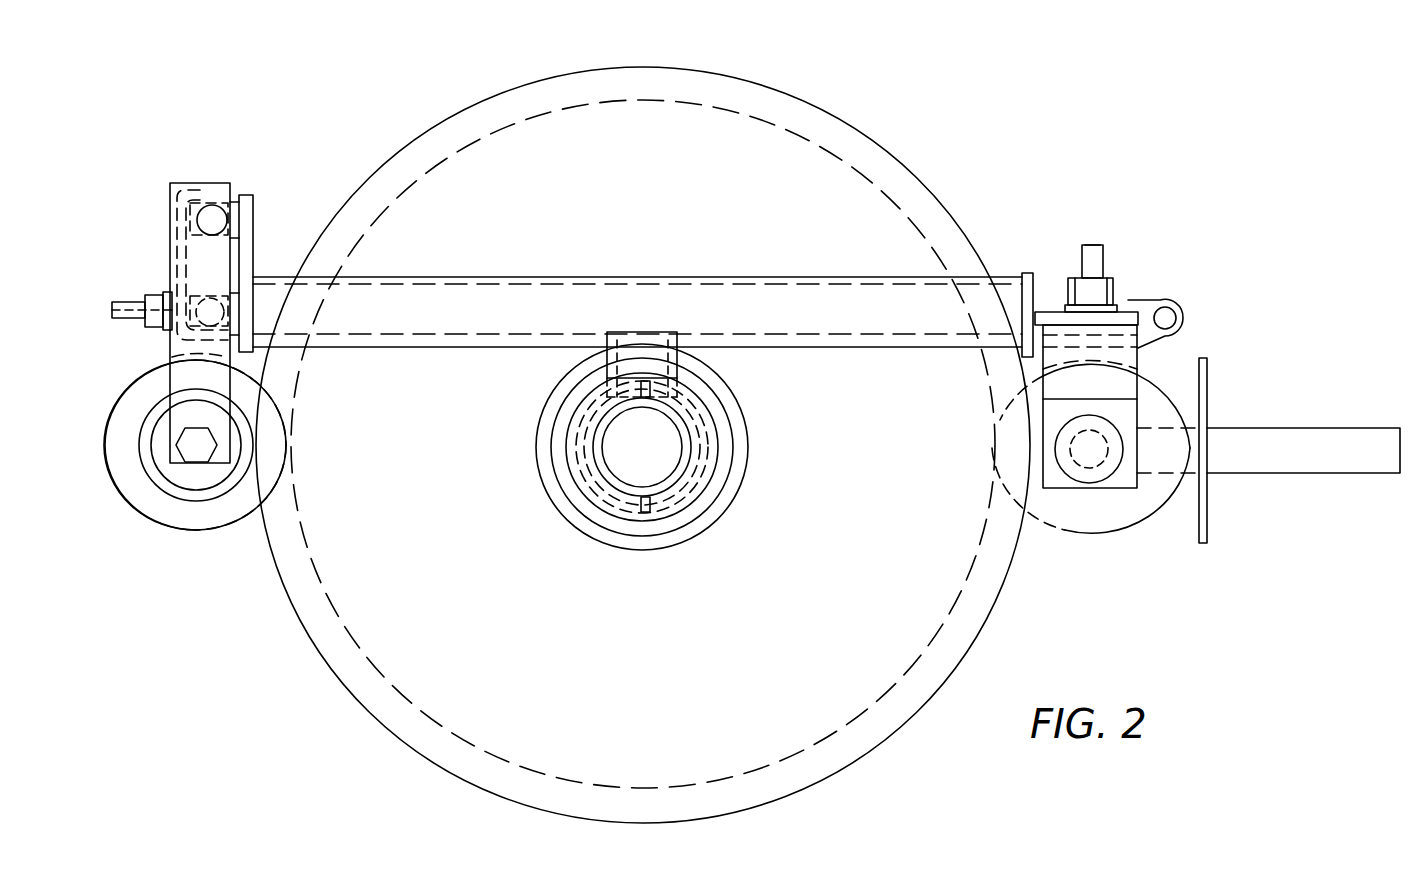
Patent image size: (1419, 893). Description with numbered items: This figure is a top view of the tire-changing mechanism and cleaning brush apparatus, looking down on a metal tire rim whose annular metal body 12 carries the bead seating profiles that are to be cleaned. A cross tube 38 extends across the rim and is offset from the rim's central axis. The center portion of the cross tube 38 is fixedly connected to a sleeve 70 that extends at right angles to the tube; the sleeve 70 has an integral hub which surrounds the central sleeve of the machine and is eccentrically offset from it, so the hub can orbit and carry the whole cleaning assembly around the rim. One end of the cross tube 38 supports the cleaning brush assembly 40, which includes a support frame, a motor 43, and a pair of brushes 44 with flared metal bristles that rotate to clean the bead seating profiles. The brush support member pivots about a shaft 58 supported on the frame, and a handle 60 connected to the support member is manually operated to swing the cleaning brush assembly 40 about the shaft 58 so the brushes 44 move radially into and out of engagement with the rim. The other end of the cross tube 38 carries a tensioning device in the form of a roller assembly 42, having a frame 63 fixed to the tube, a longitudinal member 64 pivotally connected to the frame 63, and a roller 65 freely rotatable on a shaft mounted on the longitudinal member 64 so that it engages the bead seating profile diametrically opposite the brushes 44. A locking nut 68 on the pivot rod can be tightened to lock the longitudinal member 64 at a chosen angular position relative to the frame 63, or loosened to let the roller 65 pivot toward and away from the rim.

The annular metal body 12 is at (932, 172).
The cross tube 38 is at (750, 302).
The cleaning brush assembly 40 is at (1252, 354).
The roller assembly 42 is at (118, 282).
The motor 43 is at (1106, 468).
The brushes 44 is at (1083, 543).
The shaft 58 is at (1165, 316).
The handle 60 is at (1268, 440).
The frame 63 is at (265, 240).
The longitudinal member 64 is at (182, 382).
The roller 65 is at (203, 520).
The locking nut 68 is at (156, 298).
The sleeve 70 is at (644, 345).